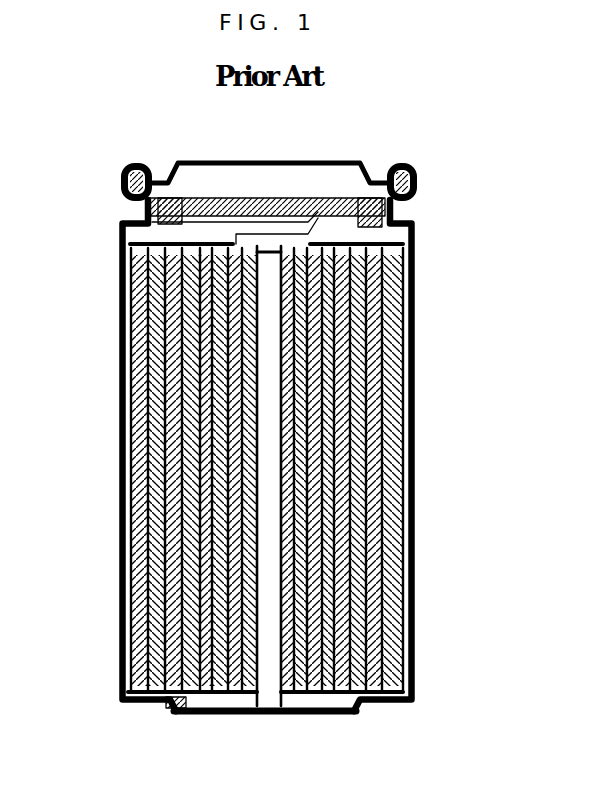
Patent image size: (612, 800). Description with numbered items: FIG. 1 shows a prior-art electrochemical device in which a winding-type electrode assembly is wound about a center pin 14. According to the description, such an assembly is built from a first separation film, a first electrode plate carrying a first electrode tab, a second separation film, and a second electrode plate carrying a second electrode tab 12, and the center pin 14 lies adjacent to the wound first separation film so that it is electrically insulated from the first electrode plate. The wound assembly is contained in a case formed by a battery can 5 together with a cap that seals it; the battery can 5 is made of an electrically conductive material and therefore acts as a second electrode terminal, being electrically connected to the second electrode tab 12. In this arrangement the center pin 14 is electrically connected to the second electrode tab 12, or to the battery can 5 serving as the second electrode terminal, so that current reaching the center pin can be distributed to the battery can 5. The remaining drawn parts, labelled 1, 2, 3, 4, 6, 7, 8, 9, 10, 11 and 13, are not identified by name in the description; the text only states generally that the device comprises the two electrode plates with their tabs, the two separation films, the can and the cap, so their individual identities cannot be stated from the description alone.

The positive electrode 1 is at (405, 305).
The negative electrode 2 is at (402, 413).
The separator 3 is at (400, 512).
The battery can bottom 4 is at (387, 708).
The battery can 5 is at (121, 341).
The sealing gasket 6 is at (130, 172).
The battery cover 7 is at (230, 162).
The sealing plate 8 is at (342, 200).
The gasket 9 is at (418, 182).
The positive current collector 10 is at (146, 419).
The negative current collector 11 is at (160, 493).
The second electrode tab 12 is at (175, 707).
The positive electrode lead 13 is at (313, 218).
The center pin 14 is at (283, 712).